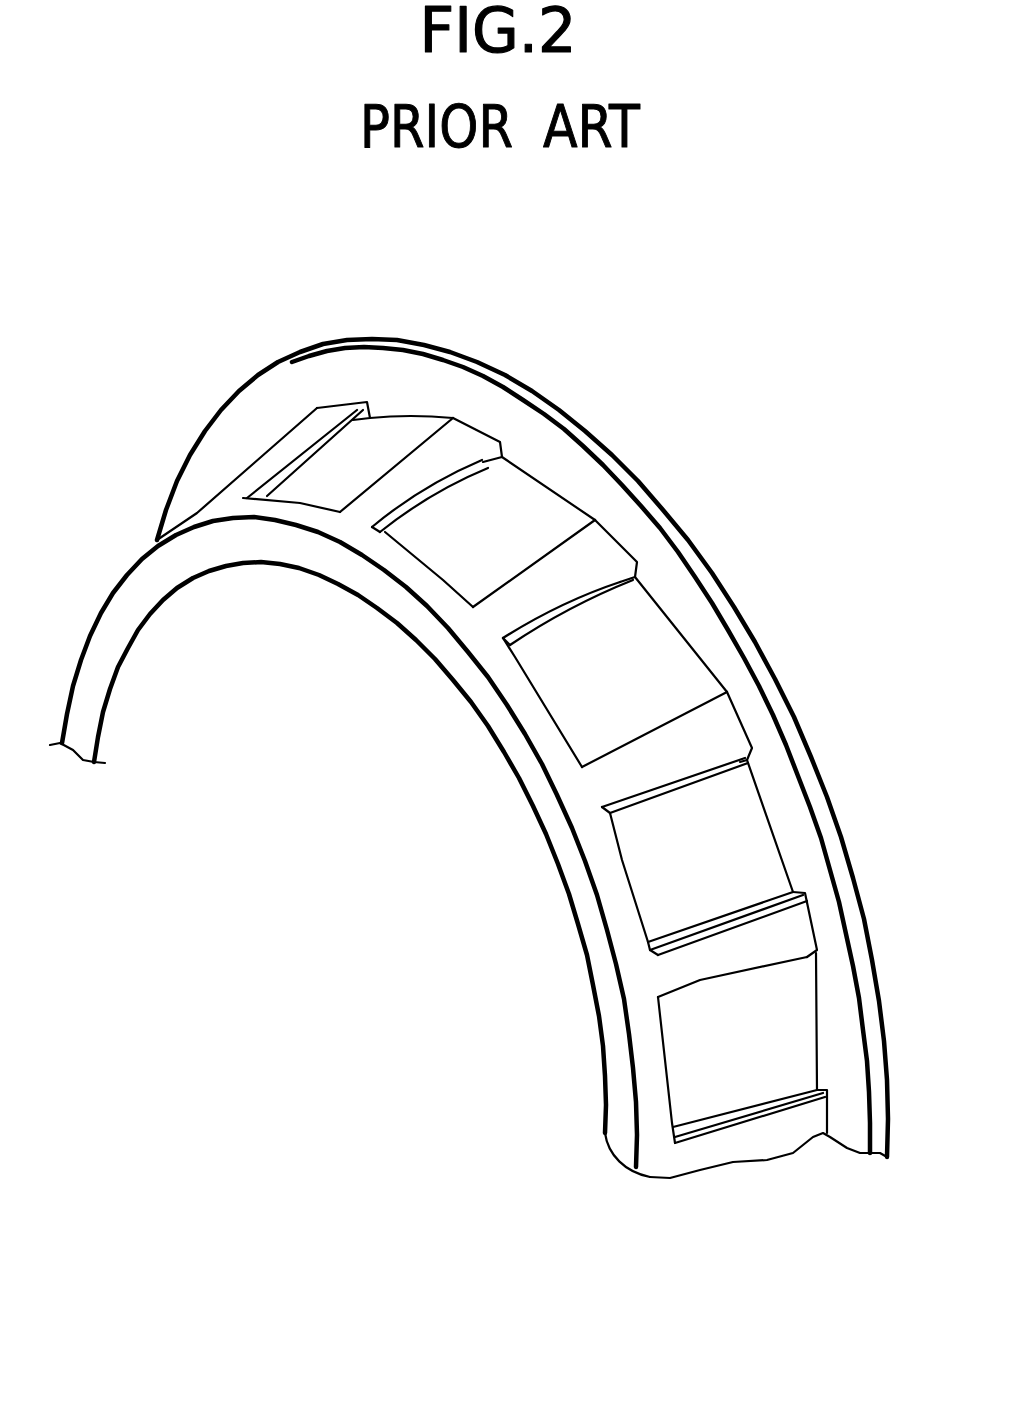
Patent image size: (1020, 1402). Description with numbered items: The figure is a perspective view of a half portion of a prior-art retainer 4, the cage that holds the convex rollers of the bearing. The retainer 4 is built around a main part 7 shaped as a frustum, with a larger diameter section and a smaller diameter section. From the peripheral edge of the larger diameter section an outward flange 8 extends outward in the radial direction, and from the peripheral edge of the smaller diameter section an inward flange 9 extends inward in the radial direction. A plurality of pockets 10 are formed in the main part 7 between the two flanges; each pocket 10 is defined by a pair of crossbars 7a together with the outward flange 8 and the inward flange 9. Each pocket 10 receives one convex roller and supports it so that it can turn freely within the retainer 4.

The retainer 4 is at (643, 493).
The main part 7 is at (782, 1213).
The crossbar 7a is at (668, 535).
The outward flange 8 is at (680, 613).
The inward flange 9 is at (400, 608).
The pocket 10 is at (356, 418).